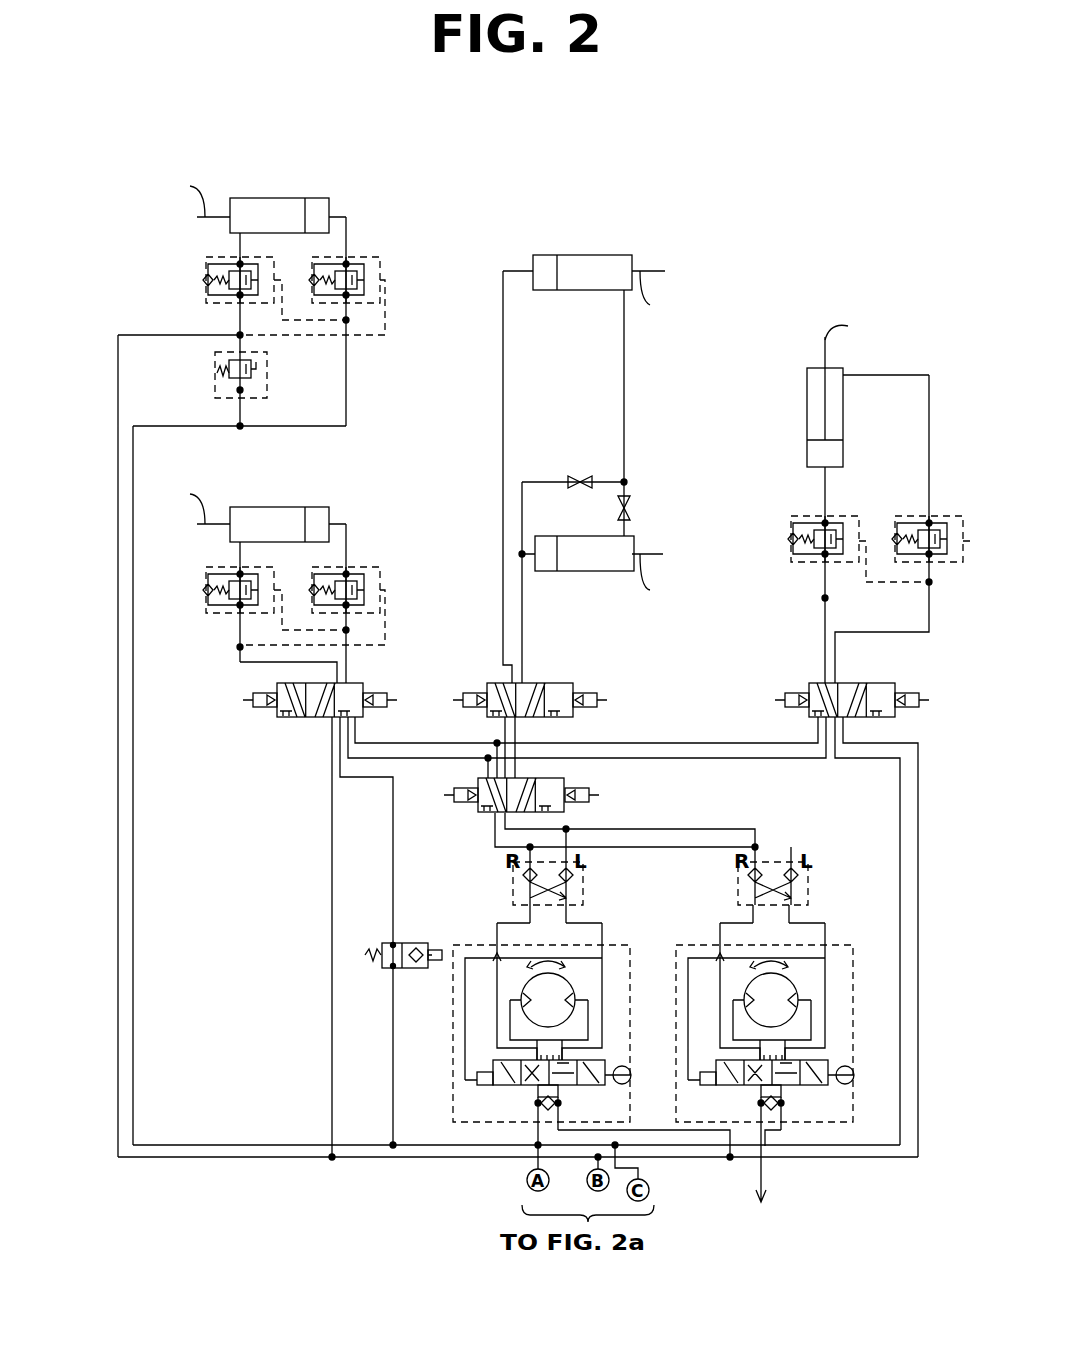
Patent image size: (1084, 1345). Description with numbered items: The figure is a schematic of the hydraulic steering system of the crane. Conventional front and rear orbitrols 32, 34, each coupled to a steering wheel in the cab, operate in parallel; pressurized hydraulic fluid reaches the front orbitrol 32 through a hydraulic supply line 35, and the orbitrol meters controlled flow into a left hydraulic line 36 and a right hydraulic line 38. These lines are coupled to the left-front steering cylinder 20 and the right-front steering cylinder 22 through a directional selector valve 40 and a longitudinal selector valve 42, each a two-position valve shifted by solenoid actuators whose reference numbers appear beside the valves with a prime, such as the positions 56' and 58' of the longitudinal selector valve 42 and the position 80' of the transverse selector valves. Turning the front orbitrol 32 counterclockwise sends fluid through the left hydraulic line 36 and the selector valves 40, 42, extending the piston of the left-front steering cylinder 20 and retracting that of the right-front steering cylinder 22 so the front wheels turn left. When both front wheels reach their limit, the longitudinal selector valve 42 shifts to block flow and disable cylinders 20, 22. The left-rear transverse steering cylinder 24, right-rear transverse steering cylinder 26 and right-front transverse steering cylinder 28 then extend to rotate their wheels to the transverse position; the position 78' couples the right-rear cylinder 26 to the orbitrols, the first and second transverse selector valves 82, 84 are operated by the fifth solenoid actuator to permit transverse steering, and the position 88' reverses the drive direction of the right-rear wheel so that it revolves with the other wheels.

The left-front steering cylinder 20 is at (600, 255).
The right-front steering cylinder 22 is at (632, 548).
The left-rear transverse steering cylinder 24 is at (308, 198).
The right-rear transverse steering cylinder 26 is at (305, 507).
The right-front transverse steering cylinder 28 is at (807, 397).
The front orbitrol 32 is at (798, 985).
The rear orbitrol 34 is at (575, 985).
The hydraulic supply line 35 is at (732, 1162).
The left hydraulic line 36 is at (780, 847).
The right hydraulic line 38 is at (710, 829).
The directional selector valve 40 is at (567, 786).
The longitudinal selector valve 42 is at (573, 690).
The first solenoid actuator position 56' is at (460, 677).
The second solenoid actuator position 58' is at (625, 712).
The fourth solenoid actuator position 78' is at (412, 934).
The fifth solenoid actuator position 80' is at (526, 748).
The first transverse selector valve 82 is at (300, 717).
The second transverse selector valve 84 is at (856, 683).
The sixth solenoid actuator position 88' is at (583, 756).